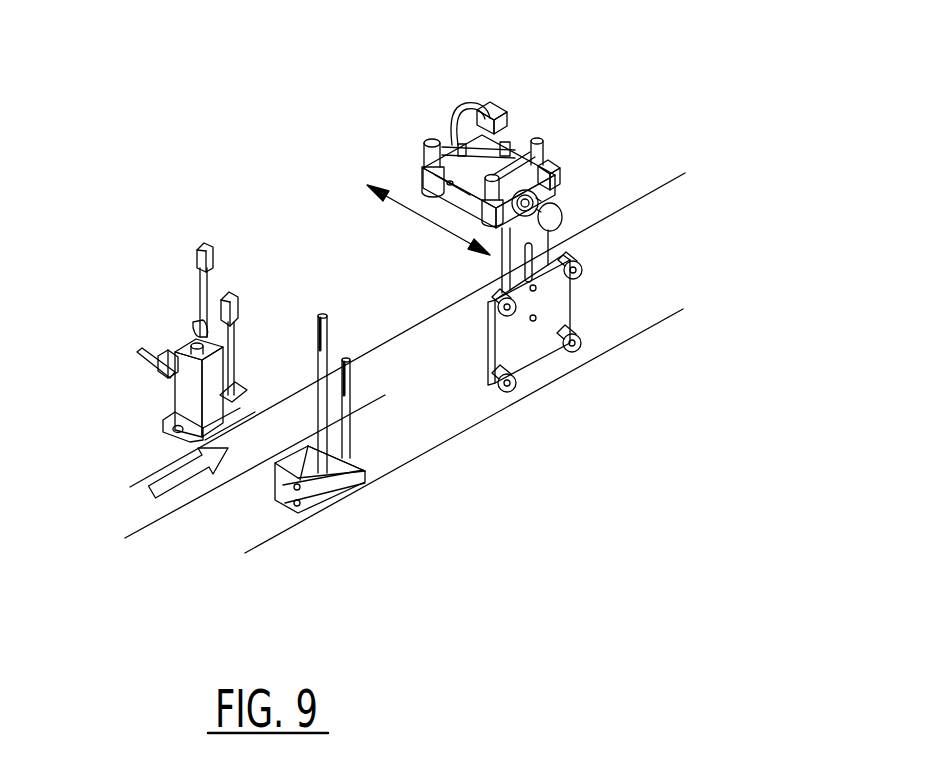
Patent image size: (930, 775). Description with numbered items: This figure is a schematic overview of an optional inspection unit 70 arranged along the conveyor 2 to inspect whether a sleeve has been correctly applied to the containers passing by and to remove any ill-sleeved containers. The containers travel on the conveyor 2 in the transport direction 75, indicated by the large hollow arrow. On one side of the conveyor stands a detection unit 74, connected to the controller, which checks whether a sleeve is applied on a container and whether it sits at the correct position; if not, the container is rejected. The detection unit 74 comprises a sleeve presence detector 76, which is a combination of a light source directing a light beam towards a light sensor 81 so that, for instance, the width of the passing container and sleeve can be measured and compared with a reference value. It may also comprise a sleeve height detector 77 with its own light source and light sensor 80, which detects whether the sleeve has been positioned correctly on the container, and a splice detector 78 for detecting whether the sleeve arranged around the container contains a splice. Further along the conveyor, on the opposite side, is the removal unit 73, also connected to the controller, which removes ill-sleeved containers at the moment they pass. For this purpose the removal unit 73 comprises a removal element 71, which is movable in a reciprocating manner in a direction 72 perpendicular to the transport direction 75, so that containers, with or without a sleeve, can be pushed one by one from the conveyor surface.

The conveyor 2 is at (140, 518).
The inspection unit 70 is at (428, 533).
The removal element 71 is at (558, 204).
The direction 72 is at (430, 221).
The removal unit 73 is at (612, 66).
The detection unit 74 is at (130, 124).
The transport direction 75 is at (172, 487).
The sleeve presence detector 76 is at (233, 310).
The sleeve height detector 77 is at (195, 252).
The splice detector 78 is at (183, 390).
The light sensor 80 is at (320, 322).
The light sensor 81 is at (340, 362).